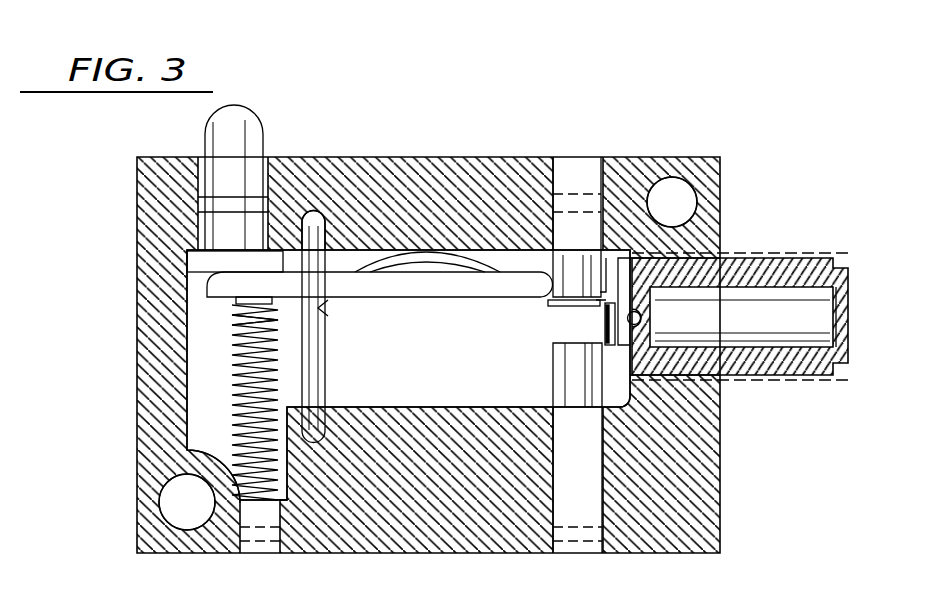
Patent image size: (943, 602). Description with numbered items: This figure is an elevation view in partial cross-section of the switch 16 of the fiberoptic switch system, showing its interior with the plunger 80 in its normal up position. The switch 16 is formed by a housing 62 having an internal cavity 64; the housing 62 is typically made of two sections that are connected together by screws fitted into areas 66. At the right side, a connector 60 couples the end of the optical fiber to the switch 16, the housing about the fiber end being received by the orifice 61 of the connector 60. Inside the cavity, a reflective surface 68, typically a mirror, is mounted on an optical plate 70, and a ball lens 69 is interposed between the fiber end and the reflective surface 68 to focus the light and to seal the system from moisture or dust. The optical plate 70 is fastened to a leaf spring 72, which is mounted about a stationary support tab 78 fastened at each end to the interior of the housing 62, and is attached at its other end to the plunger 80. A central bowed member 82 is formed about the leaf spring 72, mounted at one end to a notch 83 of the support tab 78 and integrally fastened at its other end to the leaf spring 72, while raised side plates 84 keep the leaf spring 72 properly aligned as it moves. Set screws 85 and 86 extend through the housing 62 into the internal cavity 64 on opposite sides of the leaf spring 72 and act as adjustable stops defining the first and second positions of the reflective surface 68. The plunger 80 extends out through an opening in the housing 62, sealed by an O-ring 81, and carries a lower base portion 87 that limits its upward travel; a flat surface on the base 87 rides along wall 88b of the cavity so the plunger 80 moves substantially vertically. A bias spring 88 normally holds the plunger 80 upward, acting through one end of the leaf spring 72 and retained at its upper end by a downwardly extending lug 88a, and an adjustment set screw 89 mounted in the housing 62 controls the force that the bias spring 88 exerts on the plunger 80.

The switch 16 is at (400, 113).
The connector 60 is at (794, 268).
The orifice 61 is at (742, 300).
The housing 62 is at (152, 200).
The internal cavity 64 is at (210, 382).
The areas 66 is at (676, 196).
The reflective surface 68 is at (613, 348).
The ball lens 69 is at (645, 302).
The optical plate 70 is at (608, 262).
The leaf spring 72 is at (447, 285).
The support tab 78 is at (318, 208).
The plunger 80 is at (242, 120).
The O-ring 81 is at (267, 204).
The central bowed member 82 is at (425, 243).
The notch 83 is at (328, 312).
The raised side plates 84 is at (334, 282).
The set screw 85 is at (584, 166).
The set screw 86 is at (583, 556).
The lower base portion 87 is at (206, 262).
The bias spring 88 is at (230, 427).
The downwardly extending lug 88a is at (230, 322).
The wall 88b is at (200, 305).
The adjustment set screw 89 is at (266, 556).